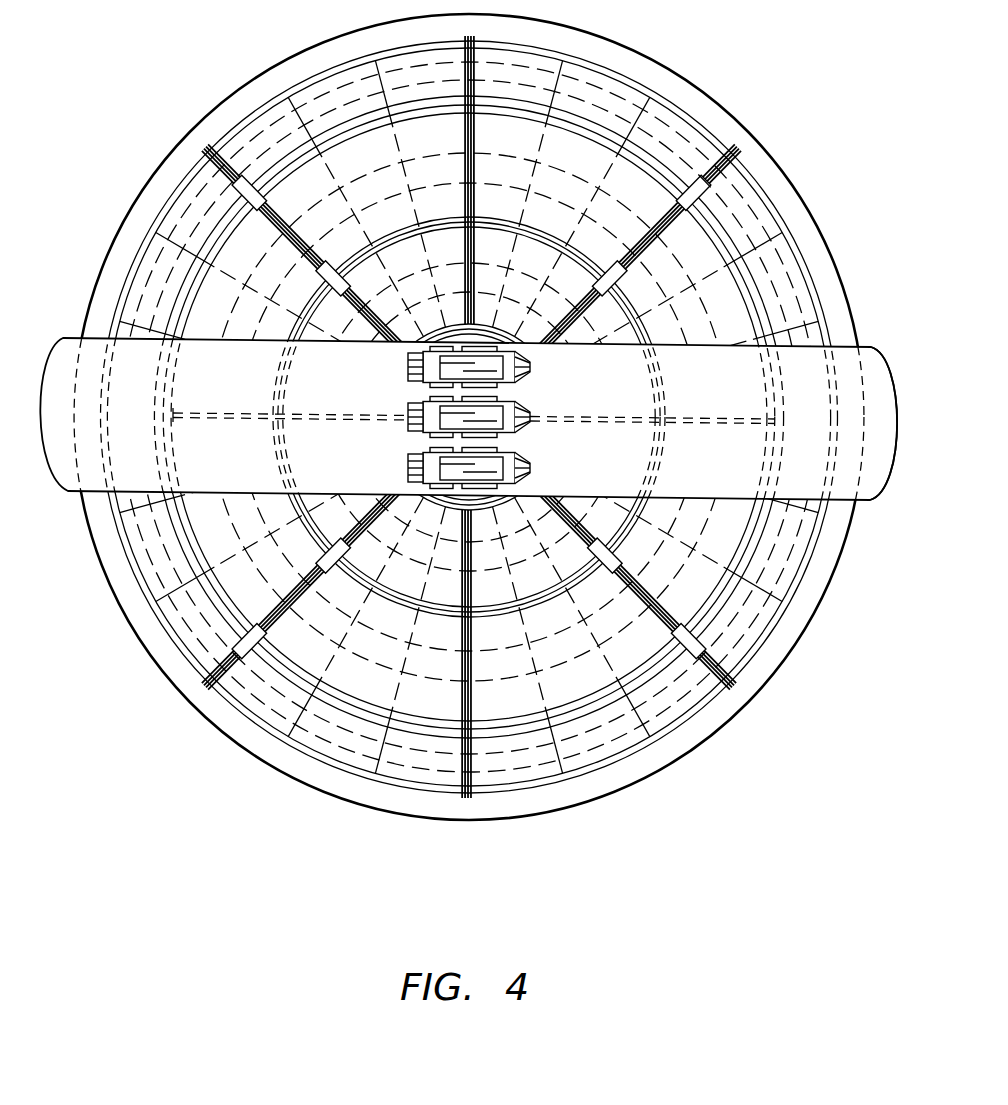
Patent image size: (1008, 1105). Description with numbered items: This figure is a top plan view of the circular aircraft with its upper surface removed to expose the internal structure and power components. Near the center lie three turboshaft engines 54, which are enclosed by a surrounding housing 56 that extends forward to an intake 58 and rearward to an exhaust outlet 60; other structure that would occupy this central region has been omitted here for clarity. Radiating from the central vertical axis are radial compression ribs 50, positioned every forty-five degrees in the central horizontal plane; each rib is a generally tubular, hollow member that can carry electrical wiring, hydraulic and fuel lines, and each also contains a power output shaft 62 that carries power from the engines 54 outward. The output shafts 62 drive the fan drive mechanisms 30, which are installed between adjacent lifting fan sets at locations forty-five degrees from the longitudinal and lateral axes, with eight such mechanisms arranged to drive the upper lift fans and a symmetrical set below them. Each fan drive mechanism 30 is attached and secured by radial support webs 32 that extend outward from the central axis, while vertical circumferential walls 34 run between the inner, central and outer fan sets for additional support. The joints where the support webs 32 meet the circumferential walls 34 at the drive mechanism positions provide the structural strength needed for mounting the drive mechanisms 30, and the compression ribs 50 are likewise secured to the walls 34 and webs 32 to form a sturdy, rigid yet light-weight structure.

The fan drive mechanism 30 is at (318, 270).
The support web 32 is at (413, 201).
The vertical circumferential wall 34 is at (557, 250).
The radial compression rib 50 is at (466, 135).
The turboshaft engine 54 is at (536, 456).
The engine housing 56 is at (352, 466).
The intake 58 is at (877, 503).
The exhaust outlet 60 is at (58, 486).
The power output shaft 62 is at (478, 250).